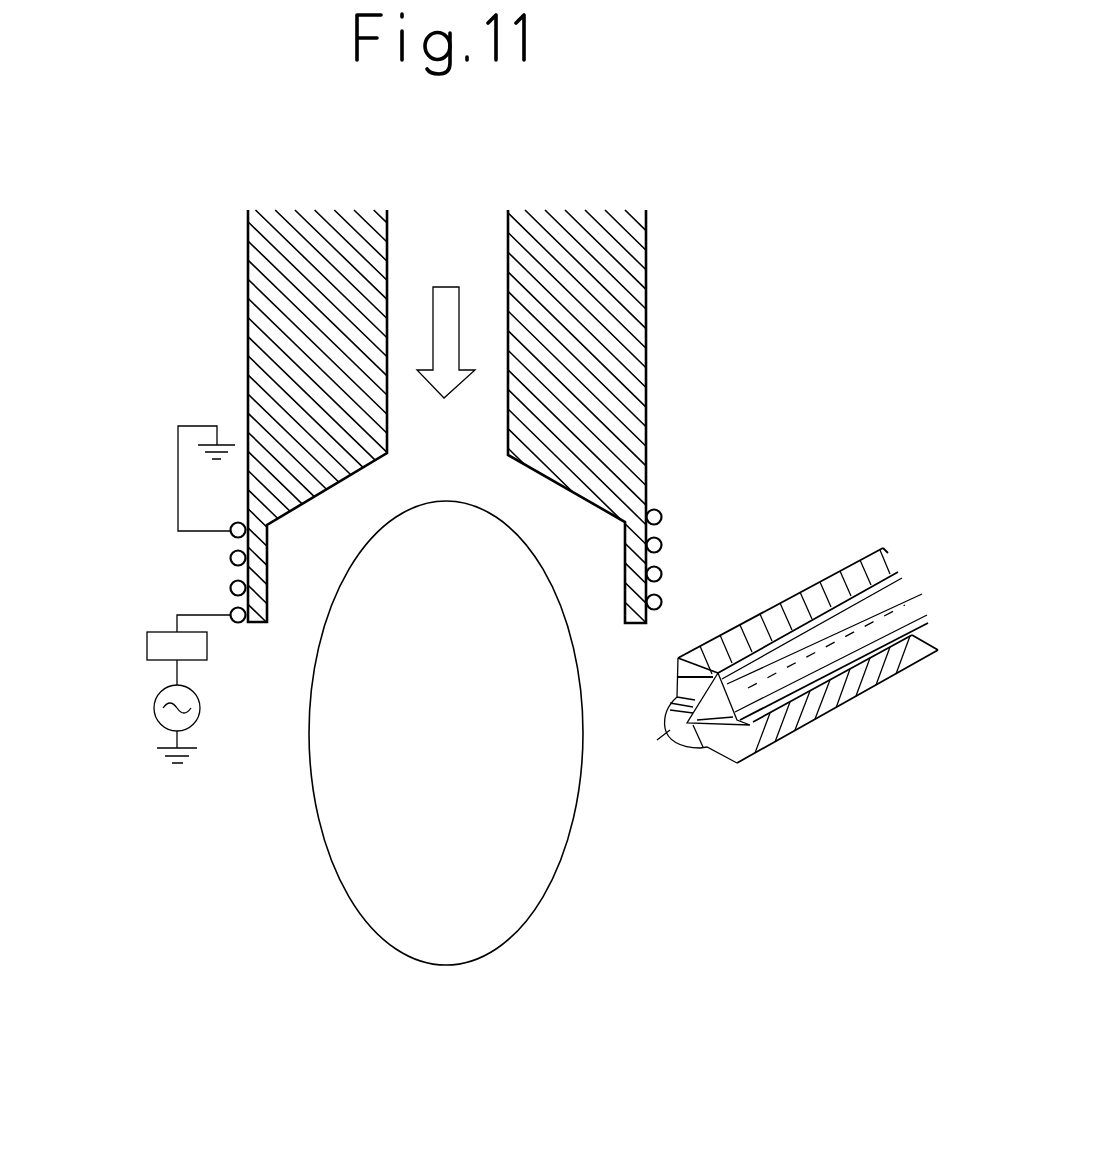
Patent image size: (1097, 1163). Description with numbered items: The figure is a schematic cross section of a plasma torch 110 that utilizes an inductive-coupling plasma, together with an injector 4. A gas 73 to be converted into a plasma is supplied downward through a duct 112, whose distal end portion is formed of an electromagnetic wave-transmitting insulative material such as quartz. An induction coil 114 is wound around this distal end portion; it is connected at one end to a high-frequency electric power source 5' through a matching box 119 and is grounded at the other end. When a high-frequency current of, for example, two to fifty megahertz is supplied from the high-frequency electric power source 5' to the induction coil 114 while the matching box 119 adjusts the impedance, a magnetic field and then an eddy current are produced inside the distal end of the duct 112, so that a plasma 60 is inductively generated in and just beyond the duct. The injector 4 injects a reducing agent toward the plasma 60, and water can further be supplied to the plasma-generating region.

The plasma torch 110 is at (750, 206).
The duct 112 is at (602, 408).
The induction coil 114 is at (660, 511).
The gas 73 is at (452, 285).
The plasma 60 is at (553, 885).
The injector 4 is at (850, 545).
The matching box 119 is at (147, 640).
The high-frequency electric power source 5' is at (148, 701).